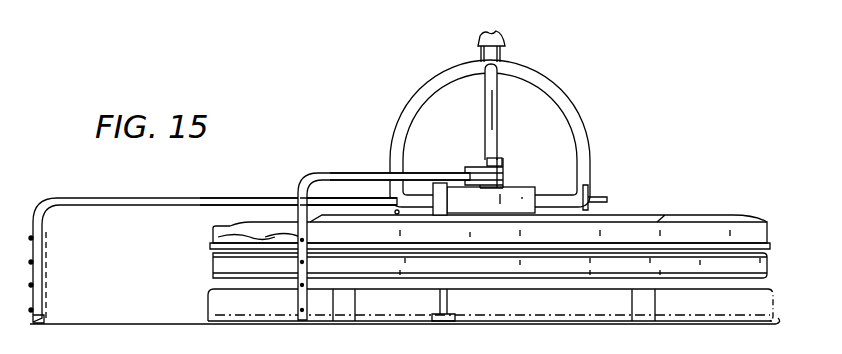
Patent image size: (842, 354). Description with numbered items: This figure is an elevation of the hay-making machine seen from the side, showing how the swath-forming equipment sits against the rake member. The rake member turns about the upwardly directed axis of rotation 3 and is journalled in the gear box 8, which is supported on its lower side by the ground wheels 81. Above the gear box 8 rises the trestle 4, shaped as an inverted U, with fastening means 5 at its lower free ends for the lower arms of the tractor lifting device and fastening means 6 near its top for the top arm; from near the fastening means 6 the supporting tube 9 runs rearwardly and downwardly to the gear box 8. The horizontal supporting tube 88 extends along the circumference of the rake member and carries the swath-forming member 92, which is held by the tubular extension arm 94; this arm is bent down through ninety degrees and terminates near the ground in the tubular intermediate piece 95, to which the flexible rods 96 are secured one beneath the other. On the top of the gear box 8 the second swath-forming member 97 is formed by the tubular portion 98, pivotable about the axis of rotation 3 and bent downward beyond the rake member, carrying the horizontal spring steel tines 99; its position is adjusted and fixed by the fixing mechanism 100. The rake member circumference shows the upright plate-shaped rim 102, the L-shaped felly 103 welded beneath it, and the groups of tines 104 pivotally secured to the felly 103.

The axis of rotation 3 is at (500, 158).
The trestle 4 is at (571, 99).
The fastening means 5 is at (608, 200).
The fastening means 6 is at (498, 36).
The gear box 8 is at (527, 190).
The supporting tube 9 is at (497, 118).
The ground wheels 81 is at (352, 305).
The supporting tube 88 is at (368, 205).
The swath-forming member 92 is at (125, 190).
The extension arm 94 is at (207, 197).
The intermediate piece 95 is at (45, 322).
The flexible rods 96 is at (48, 236).
The second swath-forming member 97 is at (341, 166).
The tubular portion 98 is at (330, 174).
The spring steel tines 99 is at (218, 237).
The fixing mechanism 100 is at (485, 165).
The rim 102 is at (220, 230).
The felly 103 is at (216, 284).
The groups of tines 104 is at (205, 307).